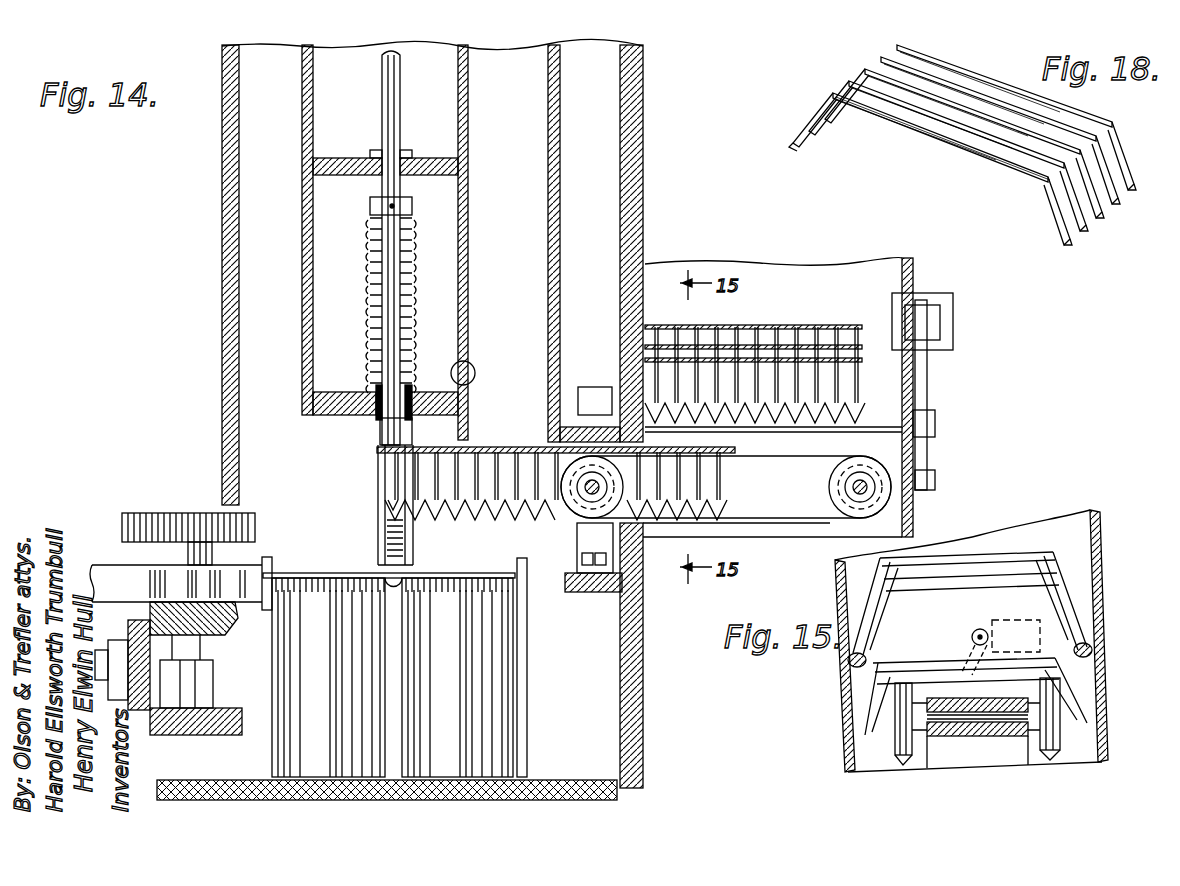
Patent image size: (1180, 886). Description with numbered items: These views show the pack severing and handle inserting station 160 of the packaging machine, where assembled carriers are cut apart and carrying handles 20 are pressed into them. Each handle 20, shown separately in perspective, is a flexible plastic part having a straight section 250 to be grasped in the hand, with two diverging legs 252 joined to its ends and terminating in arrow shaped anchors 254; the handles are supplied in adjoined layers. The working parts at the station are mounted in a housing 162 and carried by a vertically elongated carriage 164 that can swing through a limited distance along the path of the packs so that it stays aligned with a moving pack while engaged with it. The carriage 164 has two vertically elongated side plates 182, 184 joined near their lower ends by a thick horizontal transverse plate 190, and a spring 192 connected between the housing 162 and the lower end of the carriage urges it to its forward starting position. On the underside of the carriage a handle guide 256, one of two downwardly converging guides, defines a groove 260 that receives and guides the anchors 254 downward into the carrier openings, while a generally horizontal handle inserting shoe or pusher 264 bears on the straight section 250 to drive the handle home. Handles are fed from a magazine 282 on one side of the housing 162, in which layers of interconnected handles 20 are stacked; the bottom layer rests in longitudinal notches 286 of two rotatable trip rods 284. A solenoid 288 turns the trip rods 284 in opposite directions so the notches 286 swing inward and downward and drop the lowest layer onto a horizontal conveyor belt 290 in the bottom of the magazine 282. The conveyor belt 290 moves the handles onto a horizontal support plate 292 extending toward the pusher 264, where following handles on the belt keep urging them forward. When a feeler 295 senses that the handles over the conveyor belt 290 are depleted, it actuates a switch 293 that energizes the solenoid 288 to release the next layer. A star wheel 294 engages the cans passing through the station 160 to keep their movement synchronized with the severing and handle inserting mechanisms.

In FIG. 14, the carrying handle 20 is at (506, 447).
In FIG. 18, the carrying handle 20 is at (978, 130).
In FIG. 15, the carrying handle 20 is at (983, 593).
In FIG. 14, the pack severing and handle inserting station 160 is at (353, 561).
In FIG. 14, the housing 162 is at (222, 318).
In FIG. 14, the carriage 164 is at (294, 193).
In FIG. 14, the side plate 182 is at (300, 282).
In FIG. 14, the side plate 184 is at (468, 296).
In FIG. 14, the transverse plate 190 is at (330, 412).
In FIG. 14, the spring 192 is at (472, 365).
In FIG. 18, the straight section 250 is at (893, 127).
In FIG. 18, the diverging legs 252 is at (815, 120).
In FIG. 18, the arrow shaped anchors 254 is at (787, 147).
In FIG. 14, the handle guide 256 is at (378, 489).
In FIG. 14, the groove 260 is at (392, 524).
In FIG. 14, the handle inserting shoe or pusher 264 is at (392, 433).
In FIG. 14, the magazine 282 is at (913, 262).
In FIG. 15, the magazine 282 is at (1113, 503).
In FIG. 14, the trip rod 284 is at (878, 418).
In FIG. 15, the trip rod 284 is at (843, 672).
In FIG. 15, the longitudinal notches 286 is at (867, 651).
In FIG. 14, the solenoid 288 is at (953, 345).
In FIG. 14, the horizontal conveyor belt 290 is at (773, 457).
In FIG. 15, the horizontal conveyor belt 290 is at (917, 690).
In FIG. 14, the horizontal support plate 292 is at (427, 443).
In FIG. 14, the switch 293 is at (578, 398).
In FIG. 15, the switch 293 is at (1013, 624).
In FIG. 14, the star wheel 294 is at (112, 565).
In FIG. 14, the feeler 295 is at (600, 415).
In FIG. 15, the feeler 295 is at (1010, 688).